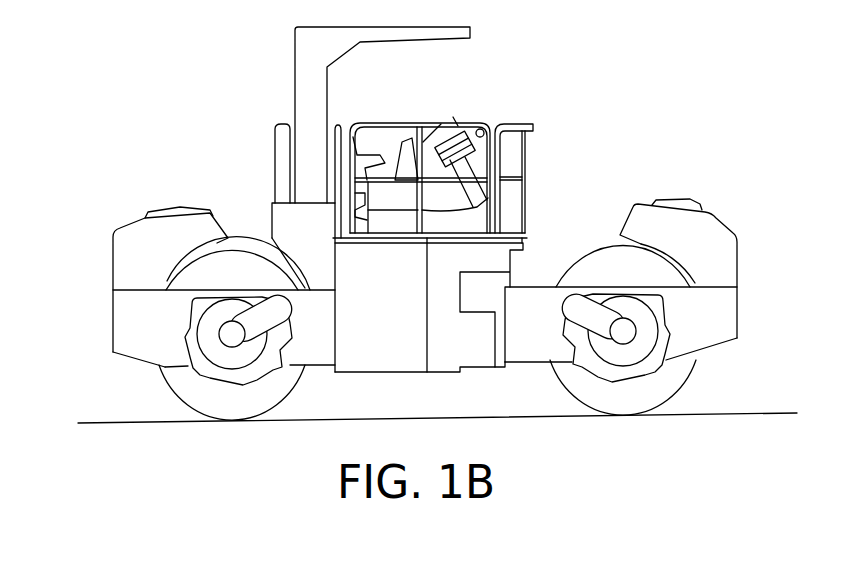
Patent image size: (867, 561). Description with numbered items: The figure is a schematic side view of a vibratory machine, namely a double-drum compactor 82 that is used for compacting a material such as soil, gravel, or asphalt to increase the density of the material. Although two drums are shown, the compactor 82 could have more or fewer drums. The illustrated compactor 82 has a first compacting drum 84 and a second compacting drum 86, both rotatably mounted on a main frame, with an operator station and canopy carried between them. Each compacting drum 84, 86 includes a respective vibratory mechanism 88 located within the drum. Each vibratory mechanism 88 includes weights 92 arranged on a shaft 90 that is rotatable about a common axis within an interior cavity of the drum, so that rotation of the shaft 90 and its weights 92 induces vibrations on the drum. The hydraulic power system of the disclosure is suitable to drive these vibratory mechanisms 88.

The compactor 82 is at (415, 254).
The first compacting drum 84 is at (677, 263).
The second compacting drum 86 is at (168, 282).
The vibratory mechanism 88 is at (216, 380).
The shaft 90 is at (413, 234).
The weights 92 is at (263, 300).